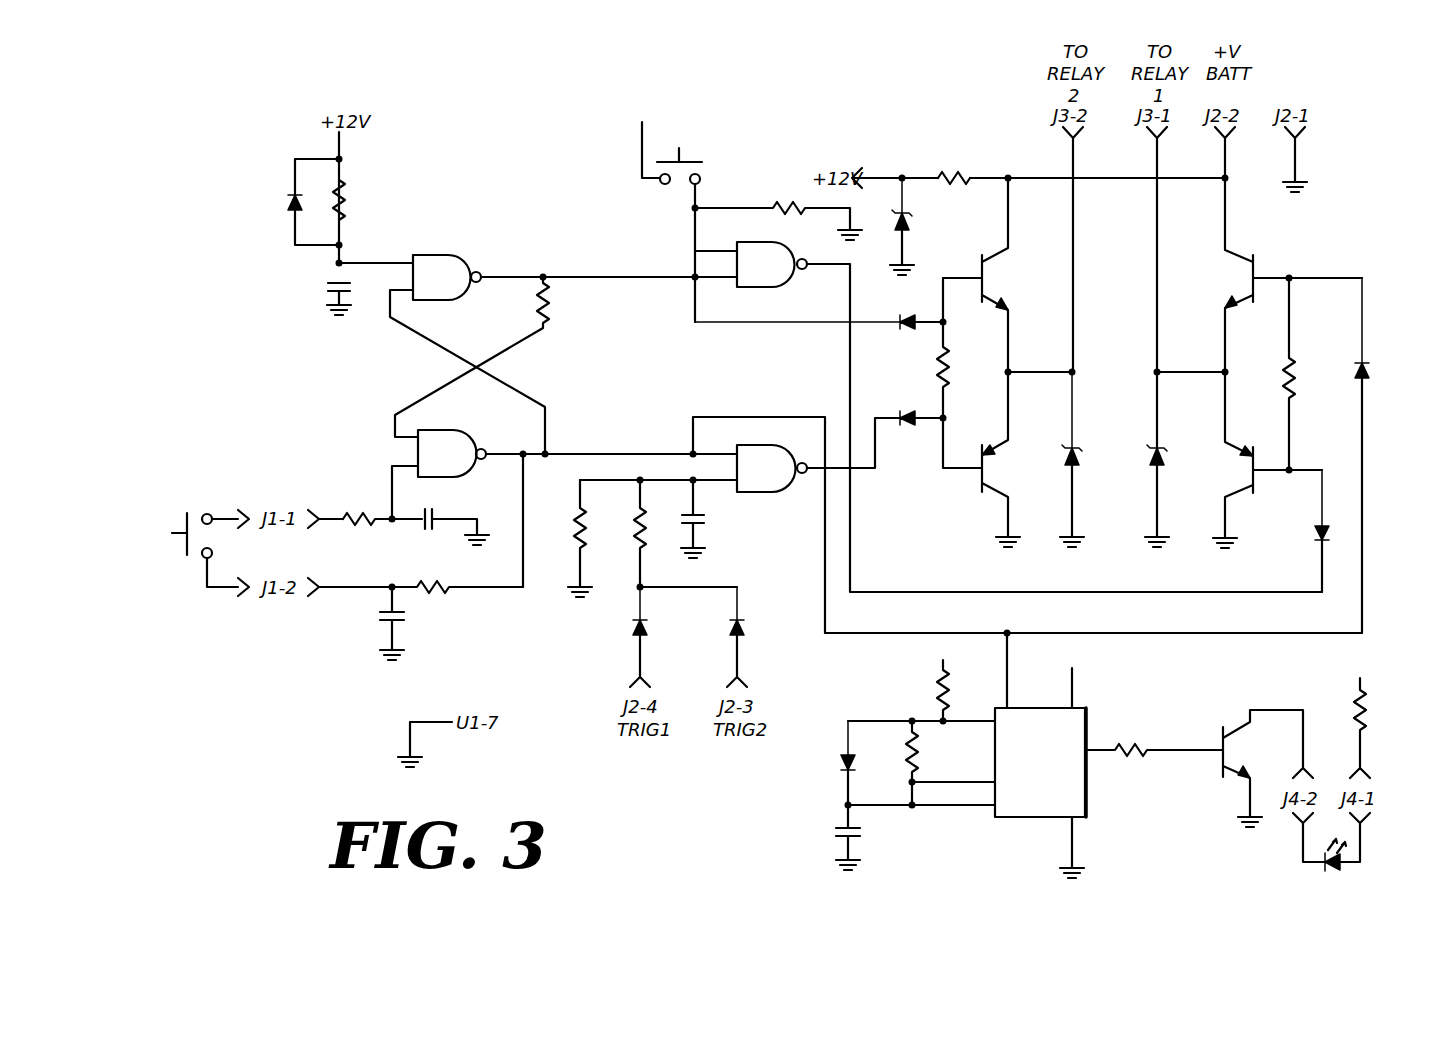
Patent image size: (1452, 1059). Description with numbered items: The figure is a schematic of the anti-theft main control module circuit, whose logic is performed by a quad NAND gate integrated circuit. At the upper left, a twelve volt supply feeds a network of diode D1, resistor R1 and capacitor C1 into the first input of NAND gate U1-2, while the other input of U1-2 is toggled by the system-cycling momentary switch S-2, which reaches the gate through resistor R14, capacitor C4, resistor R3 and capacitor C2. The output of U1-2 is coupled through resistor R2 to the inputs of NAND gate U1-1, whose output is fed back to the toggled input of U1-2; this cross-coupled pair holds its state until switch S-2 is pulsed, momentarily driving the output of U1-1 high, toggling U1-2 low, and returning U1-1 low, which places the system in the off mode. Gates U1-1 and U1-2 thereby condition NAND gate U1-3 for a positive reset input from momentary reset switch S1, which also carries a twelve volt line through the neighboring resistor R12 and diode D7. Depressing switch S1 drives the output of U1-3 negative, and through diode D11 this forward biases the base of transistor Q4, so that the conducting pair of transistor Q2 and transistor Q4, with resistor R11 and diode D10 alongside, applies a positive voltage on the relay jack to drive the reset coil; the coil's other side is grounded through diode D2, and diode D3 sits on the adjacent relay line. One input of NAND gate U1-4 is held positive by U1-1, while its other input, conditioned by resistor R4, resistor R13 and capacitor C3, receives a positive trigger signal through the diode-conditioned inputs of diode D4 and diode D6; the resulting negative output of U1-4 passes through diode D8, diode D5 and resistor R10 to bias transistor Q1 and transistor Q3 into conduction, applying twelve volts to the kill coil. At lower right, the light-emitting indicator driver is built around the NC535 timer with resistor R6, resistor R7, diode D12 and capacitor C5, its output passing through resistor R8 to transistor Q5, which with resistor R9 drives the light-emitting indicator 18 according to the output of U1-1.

The LED 18 is at (1318, 871).
The diode D1 is at (282, 199).
The resistor R1 is at (366, 197).
The capacitor C1 is at (316, 294).
The NAND gate U1-2 is at (542, 337).
The resistor R2 is at (491, 356).
The NAND gate U1-1 is at (564, 507).
The cycle switch S2 S-2 is at (197, 553).
The resistor R14 is at (367, 518).
The capacitor C4 is at (440, 522).
The resistor R3 is at (778, 210).
The capacitor C2 is at (365, 627).
The resistor R4 is at (560, 538).
The resistor R13 is at (667, 533).
The capacitor C3 is at (721, 519).
The diode D4 is at (676, 637).
The diode D6 is at (773, 637).
The NAND gate U1-4 is at (1027, 525).
The reset switch S1 is at (662, 210).
The NAND gate U1-3 is at (1008, 413).
The resistor R12 is at (955, 157).
The diode D7 is at (937, 226).
The diode D8 is at (823, 324).
The diode D5 is at (915, 420).
The resistor R10 is at (964, 373).
The transistor Q1 is at (1008, 275).
The transistor Q3 is at (1026, 459).
The diode D2 is at (1087, 459).
The diode D3 is at (1146, 487).
The transistor Q2 is at (1267, 275).
The transistor Q4 is at (1250, 460).
The resistor R11 is at (1309, 374).
The diode D10 is at (1399, 455).
The diode D11 is at (1289, 531).
The 555 timer NC535 is at (1046, 755).
The resistor R6 is at (930, 679).
The resistor R7 is at (930, 763).
The diode D12 is at (815, 763).
The capacitor C5 is at (881, 837).
The resistor R8 is at (1154, 753).
The transistor Q5 is at (1268, 768).
The resistor R9 is at (1370, 718).